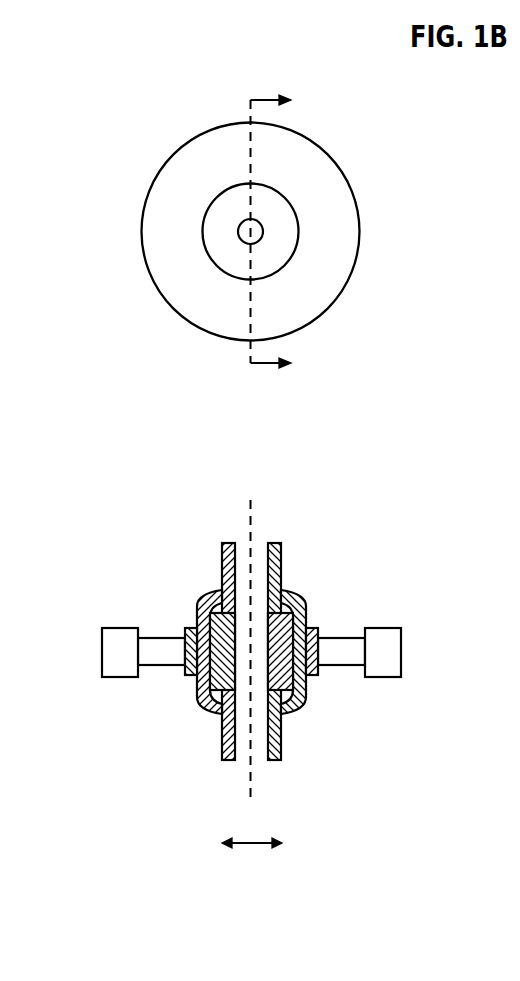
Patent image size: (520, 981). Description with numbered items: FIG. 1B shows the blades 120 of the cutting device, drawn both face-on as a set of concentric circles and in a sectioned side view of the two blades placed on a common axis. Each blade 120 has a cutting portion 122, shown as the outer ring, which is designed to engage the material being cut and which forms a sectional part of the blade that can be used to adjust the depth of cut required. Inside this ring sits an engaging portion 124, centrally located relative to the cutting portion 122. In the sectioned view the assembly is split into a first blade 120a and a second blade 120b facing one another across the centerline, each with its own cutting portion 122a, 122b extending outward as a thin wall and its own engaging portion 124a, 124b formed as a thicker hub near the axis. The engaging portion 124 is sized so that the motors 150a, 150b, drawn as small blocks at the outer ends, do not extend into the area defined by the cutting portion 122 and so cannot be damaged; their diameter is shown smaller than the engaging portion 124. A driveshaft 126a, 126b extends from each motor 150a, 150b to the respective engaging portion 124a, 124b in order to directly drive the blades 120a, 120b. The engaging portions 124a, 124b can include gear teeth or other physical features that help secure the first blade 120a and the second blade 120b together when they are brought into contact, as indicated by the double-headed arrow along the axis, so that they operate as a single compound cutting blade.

The blade 120 is at (369, 357).
The cutting portion 122 is at (347, 180).
The engaging portion 124 is at (285, 245).
The first blade 120a is at (218, 522).
The second blade 120b is at (292, 518).
The cutting portion of first blade 122a is at (222, 570).
The cutting portion of second blade 122b is at (282, 567).
The engaging portion of first blade 124a is at (208, 708).
The engaging portion of second blade 124b is at (302, 707).
The driveshaft 126a is at (160, 665).
The driveshaft 126b is at (342, 665).
The motor 150a is at (127, 627).
The motor 150b is at (387, 627).